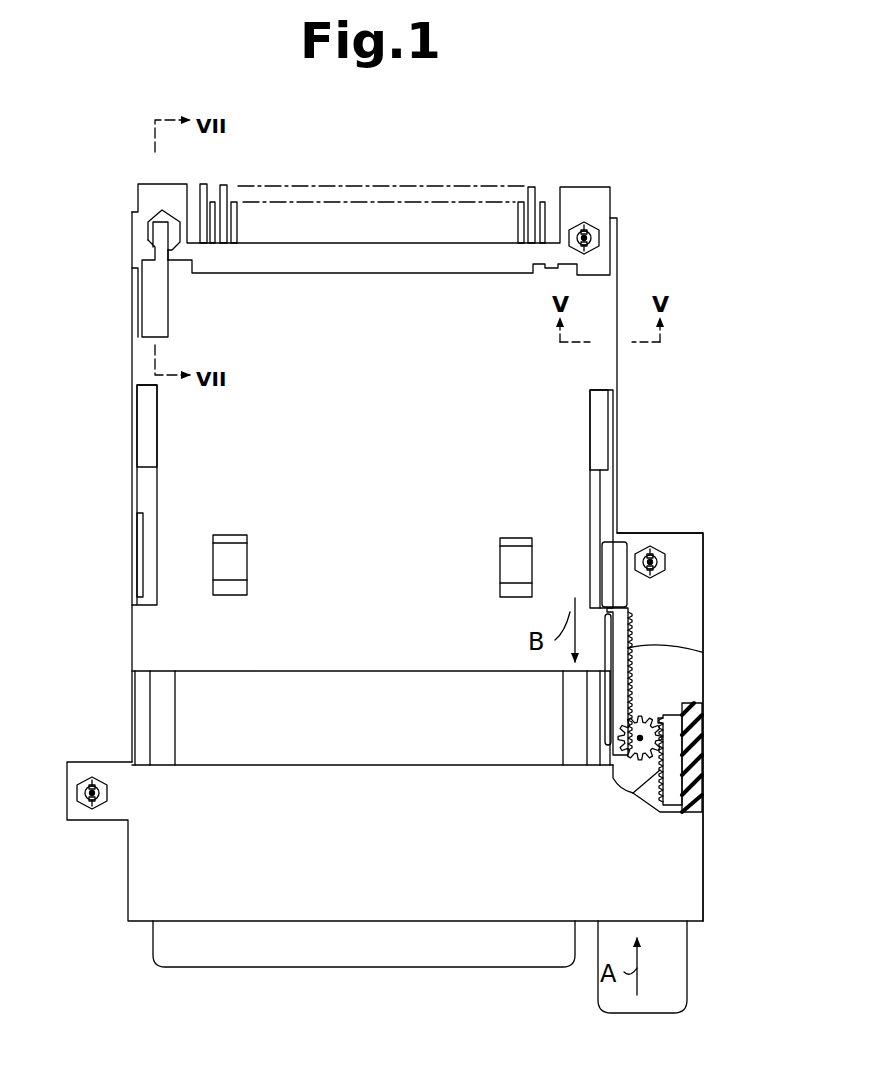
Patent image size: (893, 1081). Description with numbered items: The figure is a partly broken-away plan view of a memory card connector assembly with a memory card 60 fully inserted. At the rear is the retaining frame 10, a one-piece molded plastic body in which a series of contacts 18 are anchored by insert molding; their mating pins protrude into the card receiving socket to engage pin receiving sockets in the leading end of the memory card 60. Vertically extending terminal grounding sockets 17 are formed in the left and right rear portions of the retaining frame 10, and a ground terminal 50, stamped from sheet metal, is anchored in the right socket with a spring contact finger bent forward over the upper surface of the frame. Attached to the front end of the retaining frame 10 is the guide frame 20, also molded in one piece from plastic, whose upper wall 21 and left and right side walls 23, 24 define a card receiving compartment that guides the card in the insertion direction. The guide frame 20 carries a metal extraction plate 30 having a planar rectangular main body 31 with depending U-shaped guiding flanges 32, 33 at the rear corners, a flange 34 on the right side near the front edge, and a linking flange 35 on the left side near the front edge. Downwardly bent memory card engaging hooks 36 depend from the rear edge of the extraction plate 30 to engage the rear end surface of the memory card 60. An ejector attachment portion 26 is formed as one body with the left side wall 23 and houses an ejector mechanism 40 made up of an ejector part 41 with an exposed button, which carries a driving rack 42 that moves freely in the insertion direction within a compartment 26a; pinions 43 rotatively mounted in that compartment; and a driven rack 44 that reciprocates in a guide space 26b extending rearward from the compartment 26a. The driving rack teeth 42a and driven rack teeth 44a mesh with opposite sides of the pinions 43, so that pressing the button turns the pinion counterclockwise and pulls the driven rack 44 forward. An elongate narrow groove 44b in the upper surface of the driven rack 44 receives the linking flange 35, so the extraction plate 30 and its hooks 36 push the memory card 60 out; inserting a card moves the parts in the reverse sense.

The retaining frame 10 is at (128, 170).
The terminal grounding socket 17 is at (598, 238).
The contacts 18 is at (214, 198).
The guide frame 20 is at (120, 738).
The upper wall 21 is at (385, 841).
The left side wall 23 is at (580, 747).
The right side wall 24 is at (140, 693).
The ejector attachment portion 26 is at (702, 628).
The compartment 26a is at (693, 733).
The guide space 26b is at (615, 540).
The extraction plate 30 is at (124, 378).
The main body 31 is at (372, 519).
The flange 32 is at (617, 380).
The flange 33 is at (132, 345).
The flange 34 is at (152, 638).
The linking flange 35 is at (700, 650).
The memory card engaging hooks 36 is at (182, 270).
The ejector mechanism 40 is at (665, 825).
The ejector part 41 is at (668, 972).
The driving rack 42 is at (672, 773).
The driving rack teeth 42a is at (635, 795).
The pinions 43 is at (640, 716).
The driven rack 44 is at (610, 775).
The driven rack teeth 44a is at (632, 648).
The groove 44b is at (604, 690).
The ground terminal 50 is at (158, 292).
The memory card 60 is at (405, 955).